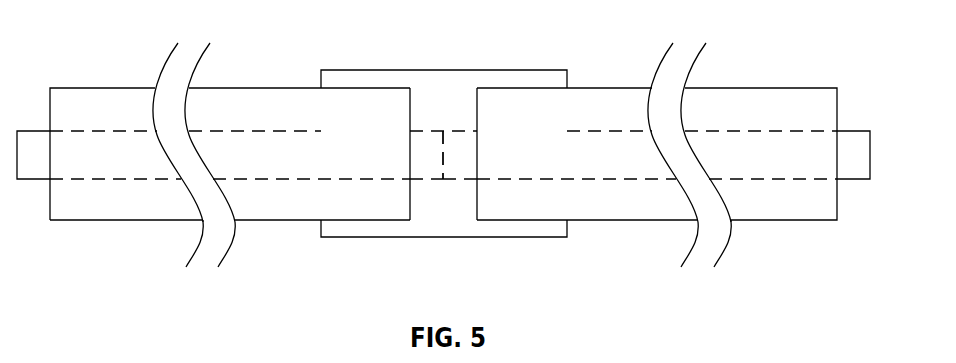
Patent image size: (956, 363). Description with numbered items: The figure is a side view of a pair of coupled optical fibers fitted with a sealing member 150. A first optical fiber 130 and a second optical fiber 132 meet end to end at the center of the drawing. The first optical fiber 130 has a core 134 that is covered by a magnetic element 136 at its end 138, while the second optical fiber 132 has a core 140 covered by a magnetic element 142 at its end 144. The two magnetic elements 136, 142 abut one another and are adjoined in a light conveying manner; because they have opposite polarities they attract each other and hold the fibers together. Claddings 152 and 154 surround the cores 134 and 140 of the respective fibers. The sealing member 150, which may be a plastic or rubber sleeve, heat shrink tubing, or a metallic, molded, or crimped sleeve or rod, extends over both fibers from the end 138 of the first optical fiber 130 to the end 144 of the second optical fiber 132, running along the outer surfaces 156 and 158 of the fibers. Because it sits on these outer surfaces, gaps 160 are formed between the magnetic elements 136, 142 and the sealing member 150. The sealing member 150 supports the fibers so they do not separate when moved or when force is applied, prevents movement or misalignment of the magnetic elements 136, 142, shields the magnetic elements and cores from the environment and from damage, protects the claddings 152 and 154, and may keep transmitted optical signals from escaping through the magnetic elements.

The first optical fiber 130 is at (98, 97).
The second optical fiber 132 is at (592, 97).
The core 134 is at (133, 180).
The magnetic element 136 is at (436, 167).
The end 138 is at (398, 221).
The core 140 is at (612, 180).
The magnetic element 142 is at (458, 167).
The end 144 is at (486, 87).
The sealing member 150 is at (458, 75).
The cladding 152 is at (68, 88).
The cladding 154 is at (760, 87).
The outer surface 156 is at (237, 220).
The outer surface 158 is at (773, 222).
The gaps 160 is at (437, 105).